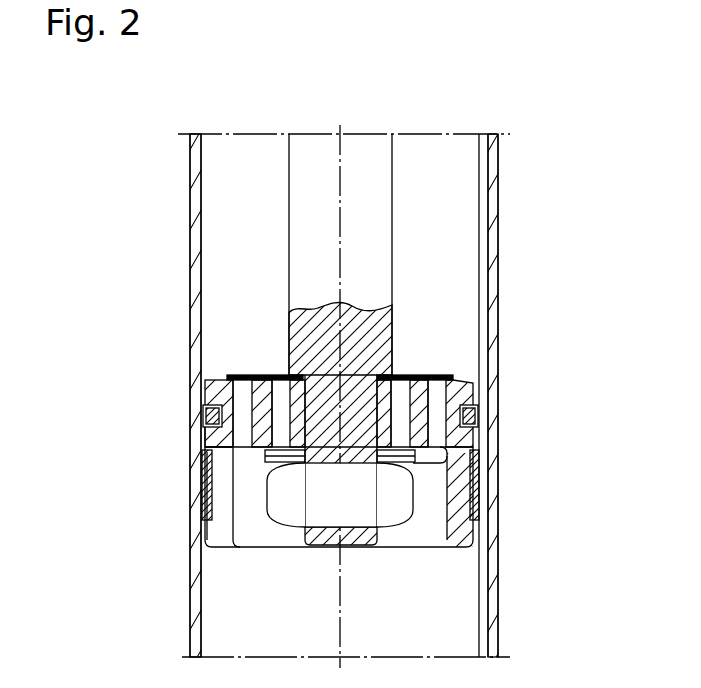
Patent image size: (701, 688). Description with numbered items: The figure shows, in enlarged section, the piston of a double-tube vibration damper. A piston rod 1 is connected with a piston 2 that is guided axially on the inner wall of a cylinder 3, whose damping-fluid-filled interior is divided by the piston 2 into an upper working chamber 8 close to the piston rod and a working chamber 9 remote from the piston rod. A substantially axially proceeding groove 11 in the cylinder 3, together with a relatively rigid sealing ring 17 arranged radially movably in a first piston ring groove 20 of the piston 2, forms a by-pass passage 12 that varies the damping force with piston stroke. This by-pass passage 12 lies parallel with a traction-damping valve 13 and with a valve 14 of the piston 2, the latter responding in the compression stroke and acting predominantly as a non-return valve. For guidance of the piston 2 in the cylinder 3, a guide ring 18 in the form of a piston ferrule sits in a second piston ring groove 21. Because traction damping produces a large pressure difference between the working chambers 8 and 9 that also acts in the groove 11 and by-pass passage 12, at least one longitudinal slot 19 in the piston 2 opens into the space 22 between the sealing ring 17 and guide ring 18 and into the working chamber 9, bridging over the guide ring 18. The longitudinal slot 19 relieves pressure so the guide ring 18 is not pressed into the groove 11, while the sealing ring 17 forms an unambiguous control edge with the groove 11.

The piston rod 1 is at (297, 157).
The piston 2 is at (205, 388).
The cylinder 3 is at (198, 195).
The upper working chamber 8 is at (452, 247).
The working chamber remote from the piston rod 9 is at (467, 573).
The axially proceeding groove 11 is at (482, 155).
The by-pass passage 12 is at (482, 400).
The traction-damping valve 13 is at (472, 460).
The valve 14 is at (437, 380).
The sealing ring 17 is at (200, 422).
The guide ring 18 is at (205, 503).
The longitudinal slot 19 is at (220, 525).
The first piston ring groove 20 is at (203, 393).
The second piston ring groove 21 is at (210, 478).
The space 22 is at (200, 437).